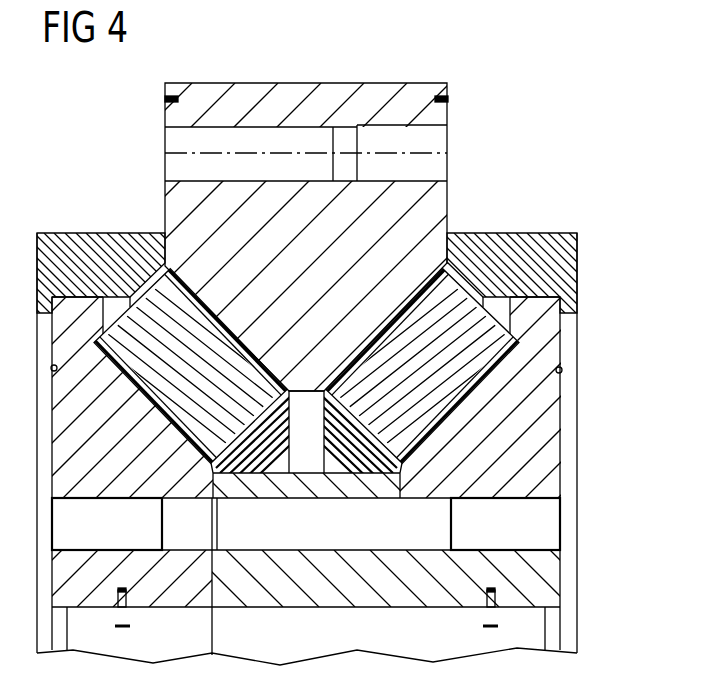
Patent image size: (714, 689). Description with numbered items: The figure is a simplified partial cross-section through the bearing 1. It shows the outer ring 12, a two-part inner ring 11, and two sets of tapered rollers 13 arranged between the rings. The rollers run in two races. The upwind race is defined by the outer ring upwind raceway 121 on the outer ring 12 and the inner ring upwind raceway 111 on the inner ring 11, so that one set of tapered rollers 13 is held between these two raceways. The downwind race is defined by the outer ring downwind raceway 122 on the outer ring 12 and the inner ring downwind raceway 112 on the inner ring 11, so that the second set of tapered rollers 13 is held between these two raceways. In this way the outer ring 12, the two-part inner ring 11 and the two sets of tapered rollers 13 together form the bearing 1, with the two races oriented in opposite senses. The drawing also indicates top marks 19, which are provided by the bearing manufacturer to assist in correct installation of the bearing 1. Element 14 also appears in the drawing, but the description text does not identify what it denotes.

The bearing 1 is at (550, 120).
The inner ring 11 is at (303, 598).
The outer ring 12 is at (437, 120).
The tapered rollers 13 is at (143, 386).
The shaft 14 is at (165, 118).
The top marks 19 is at (166, 98).
The inner ring upwind raceway 111 is at (195, 446).
The inner ring downwind raceway 112 is at (418, 441).
The outer ring upwind raceway 121 is at (246, 348).
The outer ring downwind raceway 122 is at (381, 335).